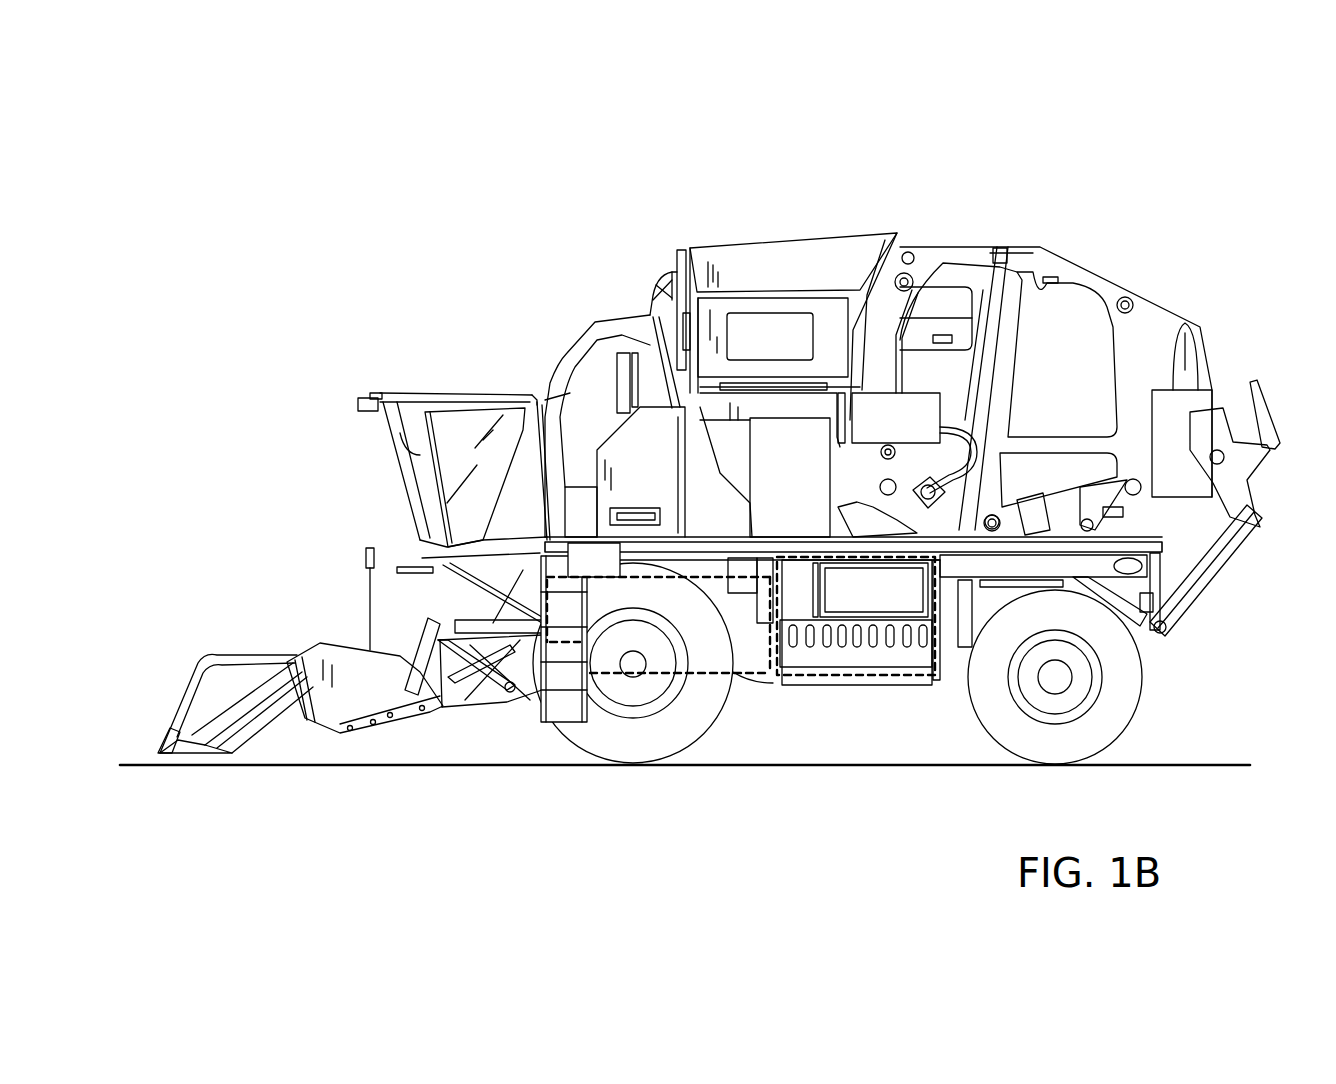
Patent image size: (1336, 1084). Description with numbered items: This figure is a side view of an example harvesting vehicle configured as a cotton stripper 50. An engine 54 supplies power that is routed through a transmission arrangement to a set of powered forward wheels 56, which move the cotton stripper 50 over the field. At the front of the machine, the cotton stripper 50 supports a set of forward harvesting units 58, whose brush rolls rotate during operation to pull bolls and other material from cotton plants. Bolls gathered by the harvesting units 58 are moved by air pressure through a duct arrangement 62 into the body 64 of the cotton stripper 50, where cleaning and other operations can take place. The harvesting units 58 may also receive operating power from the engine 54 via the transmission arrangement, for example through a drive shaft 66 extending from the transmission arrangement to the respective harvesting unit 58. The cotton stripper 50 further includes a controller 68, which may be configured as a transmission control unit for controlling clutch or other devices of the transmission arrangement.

The cotton stripper 50 is at (271, 208).
The engine 54 is at (740, 682).
The powered forward wheels 56 is at (252, 633).
The forward harvesting units 58 is at (257, 722).
The duct arrangement 62 is at (546, 354).
The body 64 is at (770, 212).
The drive shaft 66 is at (478, 712).
The controller 68 is at (566, 553).